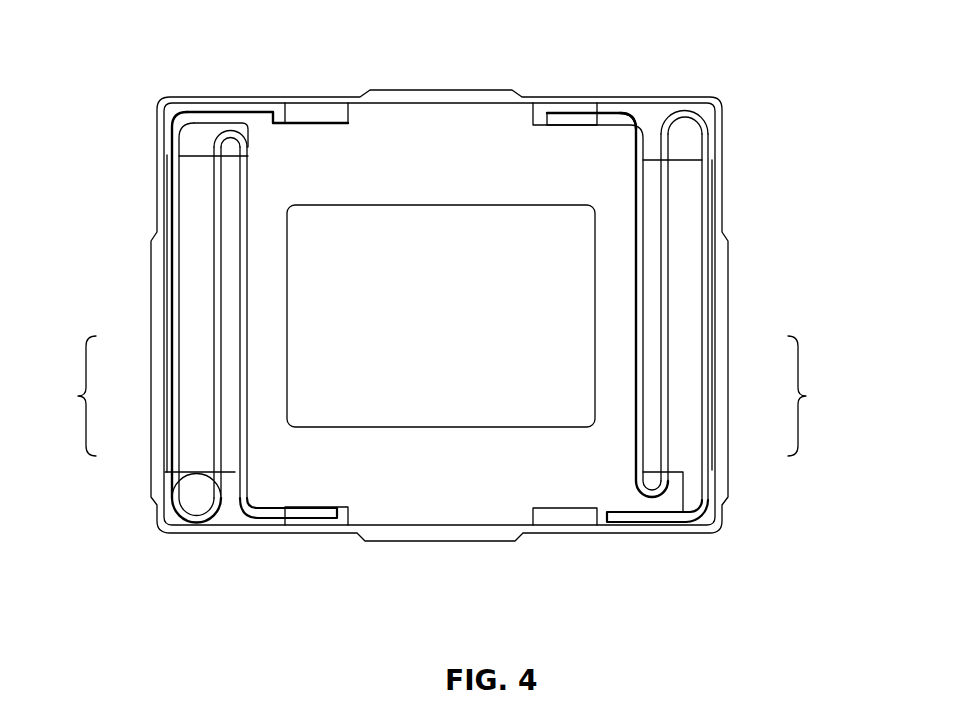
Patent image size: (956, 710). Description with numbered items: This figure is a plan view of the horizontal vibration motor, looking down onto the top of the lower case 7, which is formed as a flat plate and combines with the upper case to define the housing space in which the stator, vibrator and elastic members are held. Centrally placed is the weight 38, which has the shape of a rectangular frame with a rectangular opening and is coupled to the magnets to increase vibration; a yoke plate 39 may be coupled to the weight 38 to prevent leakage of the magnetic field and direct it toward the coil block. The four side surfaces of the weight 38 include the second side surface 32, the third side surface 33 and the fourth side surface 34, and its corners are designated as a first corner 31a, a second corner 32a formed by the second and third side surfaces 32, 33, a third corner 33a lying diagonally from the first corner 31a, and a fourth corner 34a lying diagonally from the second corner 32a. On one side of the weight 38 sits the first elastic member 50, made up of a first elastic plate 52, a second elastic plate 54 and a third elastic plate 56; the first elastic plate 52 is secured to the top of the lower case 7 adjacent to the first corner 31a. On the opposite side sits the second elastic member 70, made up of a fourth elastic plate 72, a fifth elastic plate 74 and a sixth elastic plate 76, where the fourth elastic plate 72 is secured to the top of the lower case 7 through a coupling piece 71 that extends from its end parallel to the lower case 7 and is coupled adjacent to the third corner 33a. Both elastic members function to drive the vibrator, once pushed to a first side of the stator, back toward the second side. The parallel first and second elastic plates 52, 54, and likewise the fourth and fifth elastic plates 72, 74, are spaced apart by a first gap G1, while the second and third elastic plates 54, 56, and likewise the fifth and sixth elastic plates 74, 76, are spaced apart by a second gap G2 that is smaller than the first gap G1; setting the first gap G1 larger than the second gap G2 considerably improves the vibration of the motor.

The lower case 7 is at (157, 520).
The first corner 31a is at (293, 202).
The second side surface 32 is at (252, 168).
The second corner 32a is at (255, 504).
The third side surface 33 is at (346, 528).
The third corner 33a is at (606, 507).
The fourth side surface 34 is at (640, 165).
The fourth corner 34a is at (632, 122).
The weight 38 is at (412, 188).
The yoke plate 39 is at (464, 213).
The first elastic member 50 is at (144, 315).
The first elastic plate 52 is at (152, 444).
The second elastic plate 54 is at (217, 402).
The third elastic plate 56 is at (244, 355).
The second elastic member 70 is at (742, 305).
The coupling piece 71 is at (666, 513).
The fourth elastic plate 72 is at (713, 443).
The fifth elastic plate 74 is at (663, 402).
The sixth elastic plate 76 is at (645, 355).
The first gap G1 is at (267, 220).
The second gap G2 is at (288, 268).